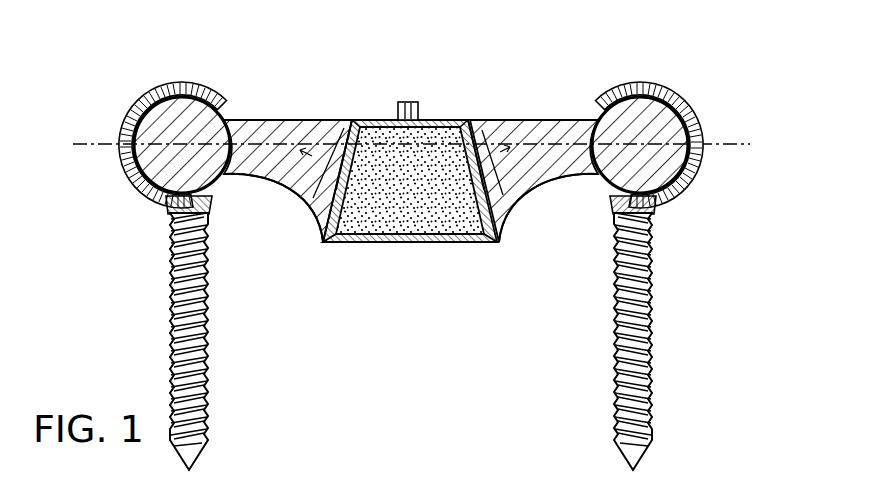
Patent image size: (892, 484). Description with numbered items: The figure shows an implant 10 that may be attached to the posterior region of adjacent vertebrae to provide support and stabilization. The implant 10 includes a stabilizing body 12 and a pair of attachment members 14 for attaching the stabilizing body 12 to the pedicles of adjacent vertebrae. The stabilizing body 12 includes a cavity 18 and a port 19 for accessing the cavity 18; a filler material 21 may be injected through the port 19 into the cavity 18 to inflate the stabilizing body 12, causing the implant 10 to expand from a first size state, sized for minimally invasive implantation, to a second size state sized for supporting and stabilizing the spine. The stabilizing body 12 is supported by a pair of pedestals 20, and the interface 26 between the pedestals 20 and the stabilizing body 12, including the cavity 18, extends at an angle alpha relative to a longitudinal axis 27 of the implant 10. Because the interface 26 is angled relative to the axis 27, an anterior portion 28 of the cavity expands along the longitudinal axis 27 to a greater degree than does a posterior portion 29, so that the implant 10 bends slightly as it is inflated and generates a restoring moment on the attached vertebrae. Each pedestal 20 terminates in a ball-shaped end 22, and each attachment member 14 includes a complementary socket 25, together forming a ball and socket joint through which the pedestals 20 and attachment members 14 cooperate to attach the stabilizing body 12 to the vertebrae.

The implant 10 is at (567, 46).
The stabilizing body 12 is at (446, 118).
The attachment members 14 is at (169, 240).
The cavity 18 is at (393, 243).
The port 19 is at (398, 104).
The pedestals 20 is at (299, 199).
The filler material 21 is at (416, 191).
The ball-shaped end 22 is at (223, 183).
The socket 25 is at (684, 95).
The interface 26 is at (343, 130).
The longitudinal axis 27 is at (167, 82).
The anterior portion 28 is at (450, 243).
The posterior portion 29 is at (373, 133).